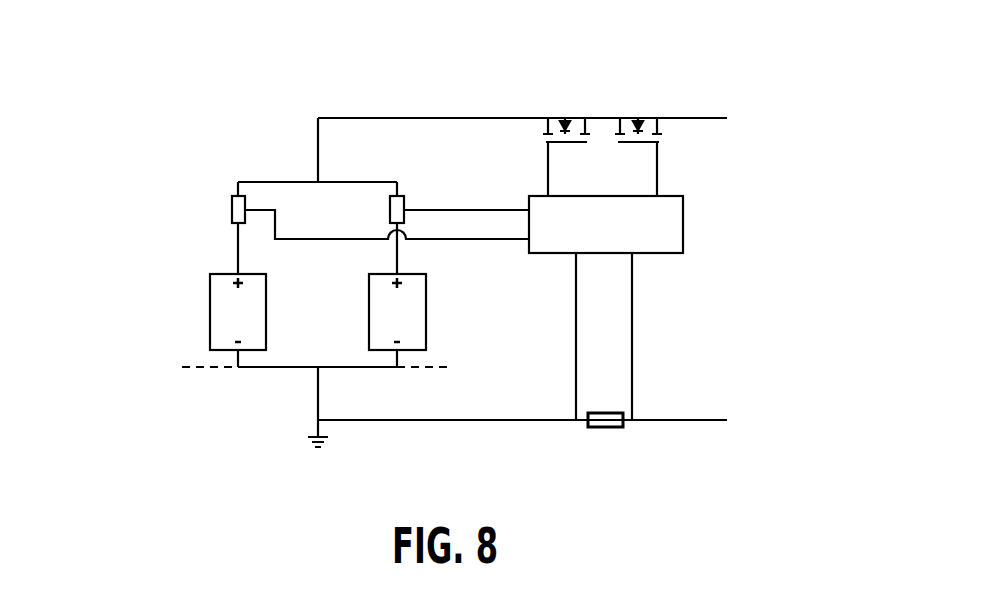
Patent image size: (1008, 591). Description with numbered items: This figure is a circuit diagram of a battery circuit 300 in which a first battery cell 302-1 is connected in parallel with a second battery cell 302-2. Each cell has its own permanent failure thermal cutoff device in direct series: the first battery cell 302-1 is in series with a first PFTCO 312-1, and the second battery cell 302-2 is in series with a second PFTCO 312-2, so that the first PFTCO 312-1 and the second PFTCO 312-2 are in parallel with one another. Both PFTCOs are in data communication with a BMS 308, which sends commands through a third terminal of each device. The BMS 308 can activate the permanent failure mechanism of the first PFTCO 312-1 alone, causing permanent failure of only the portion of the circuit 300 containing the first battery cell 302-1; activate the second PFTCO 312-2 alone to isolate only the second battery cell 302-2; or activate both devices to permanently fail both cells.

The battery circuit 300 is at (748, 54).
The first PFTCO 312-1 is at (232, 205).
The second PFTCO 312-2 is at (390, 210).
The first battery cell 302-1 is at (210, 311).
The second battery cell 302-2 is at (495, 316).
The BMS 308 is at (606, 224).